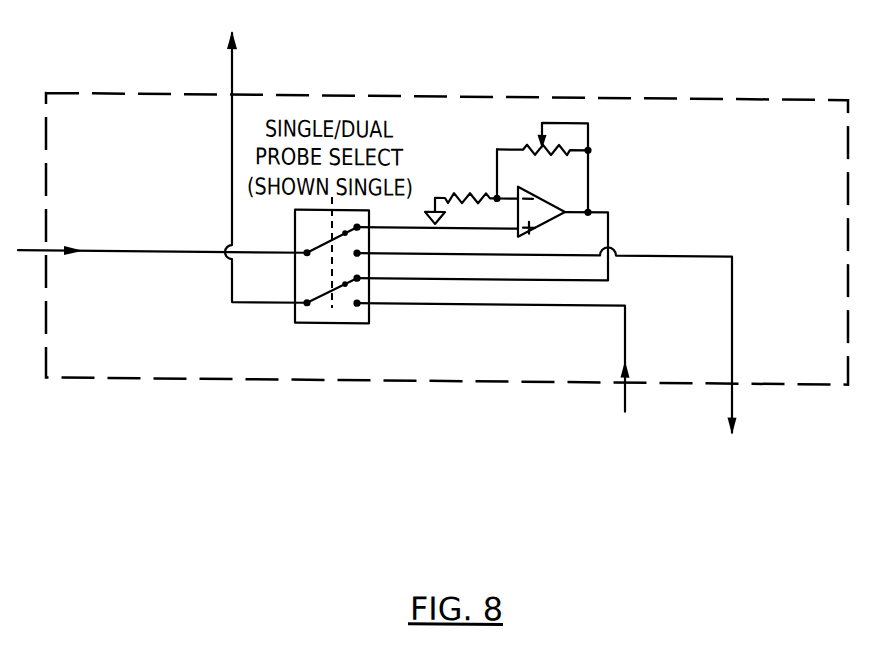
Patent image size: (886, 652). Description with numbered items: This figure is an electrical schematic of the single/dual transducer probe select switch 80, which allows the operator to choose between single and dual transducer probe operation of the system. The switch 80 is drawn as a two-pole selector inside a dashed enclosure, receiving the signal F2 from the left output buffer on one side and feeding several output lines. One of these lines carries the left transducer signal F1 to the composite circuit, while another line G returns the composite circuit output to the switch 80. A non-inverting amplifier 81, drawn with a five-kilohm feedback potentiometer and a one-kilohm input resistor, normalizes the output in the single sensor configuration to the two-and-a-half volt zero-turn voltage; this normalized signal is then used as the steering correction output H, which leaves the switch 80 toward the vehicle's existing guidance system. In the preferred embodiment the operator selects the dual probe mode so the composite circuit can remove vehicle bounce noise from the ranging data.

The single/dual transducer probe select switch 80 is at (430, 93).
The non-inverting amplifier 81 is at (547, 205).
The steering correction output H is at (205, 166).
The input from left output buffer F2 is at (162, 259).
The left transducer signal input F1 is at (600, 340).
The input from composite circuit output G is at (493, 357).